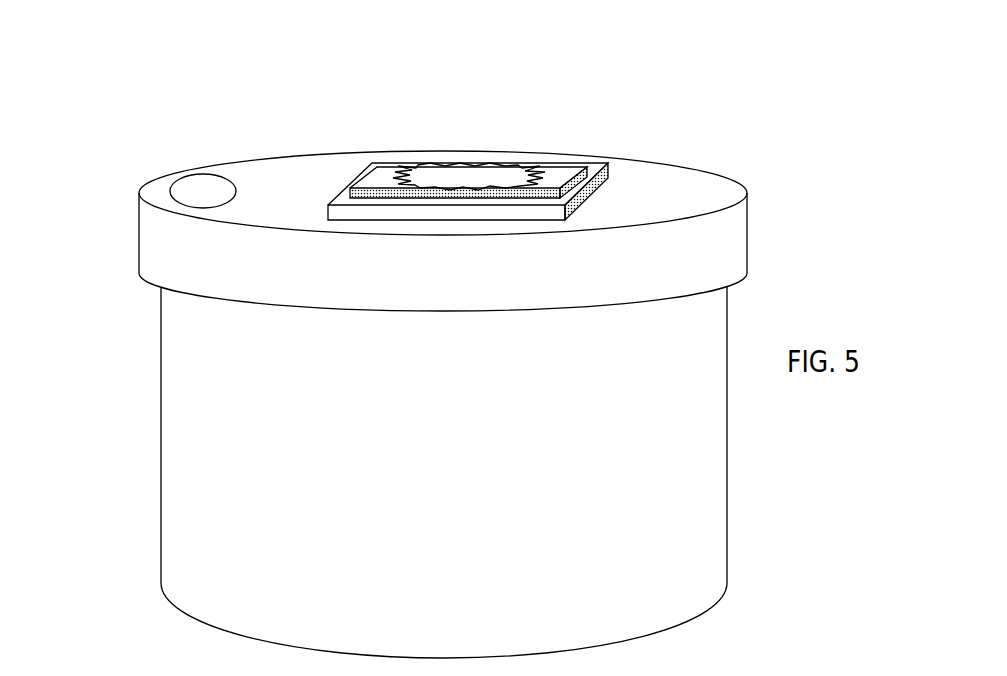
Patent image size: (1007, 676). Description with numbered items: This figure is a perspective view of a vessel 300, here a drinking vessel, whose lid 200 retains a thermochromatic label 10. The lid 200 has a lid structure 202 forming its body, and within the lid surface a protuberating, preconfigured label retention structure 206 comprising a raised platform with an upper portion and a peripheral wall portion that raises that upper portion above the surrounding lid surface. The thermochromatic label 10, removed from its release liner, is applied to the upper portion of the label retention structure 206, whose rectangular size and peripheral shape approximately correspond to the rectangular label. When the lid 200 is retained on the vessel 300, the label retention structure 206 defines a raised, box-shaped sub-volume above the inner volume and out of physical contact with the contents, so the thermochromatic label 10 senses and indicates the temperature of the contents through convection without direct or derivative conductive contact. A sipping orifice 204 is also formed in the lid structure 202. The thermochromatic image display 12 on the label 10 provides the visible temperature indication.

The thermochromatic label 10 is at (581, 113).
The sensor element 12 is at (475, 167).
The lid 200 is at (402, 192).
The lid structure 202 is at (235, 302).
The sipping orifice 204 is at (215, 176).
The label retention structure 206 is at (604, 172).
The vessel 300 is at (161, 540).